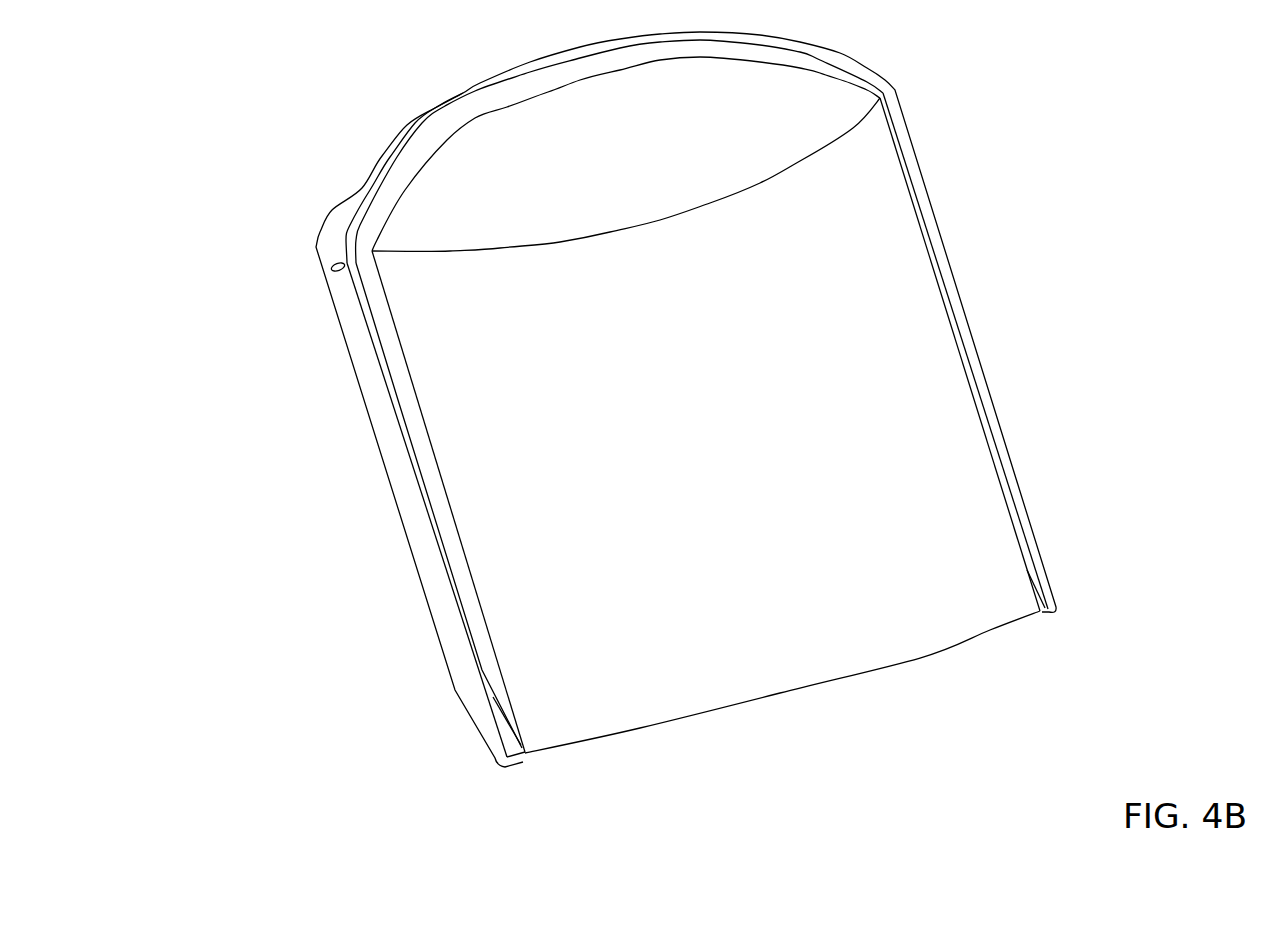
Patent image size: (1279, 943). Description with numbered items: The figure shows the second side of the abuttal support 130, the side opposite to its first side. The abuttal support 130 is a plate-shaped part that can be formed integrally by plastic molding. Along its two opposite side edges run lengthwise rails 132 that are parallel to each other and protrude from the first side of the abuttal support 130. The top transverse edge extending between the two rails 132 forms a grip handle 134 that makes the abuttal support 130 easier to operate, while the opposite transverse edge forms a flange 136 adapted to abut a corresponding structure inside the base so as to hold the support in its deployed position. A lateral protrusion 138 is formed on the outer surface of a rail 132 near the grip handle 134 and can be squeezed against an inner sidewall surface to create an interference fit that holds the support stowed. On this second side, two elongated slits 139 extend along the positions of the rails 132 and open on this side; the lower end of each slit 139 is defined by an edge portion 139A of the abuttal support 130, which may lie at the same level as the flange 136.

The abuttal support 130 is at (160, 78).
The rails 132 is at (386, 452).
The grip handle 134 is at (406, 142).
The flange 136 is at (780, 691).
The lateral protrusion 138 is at (327, 264).
The elongated slits 139 is at (447, 591).
The edge portion 139A is at (523, 761).